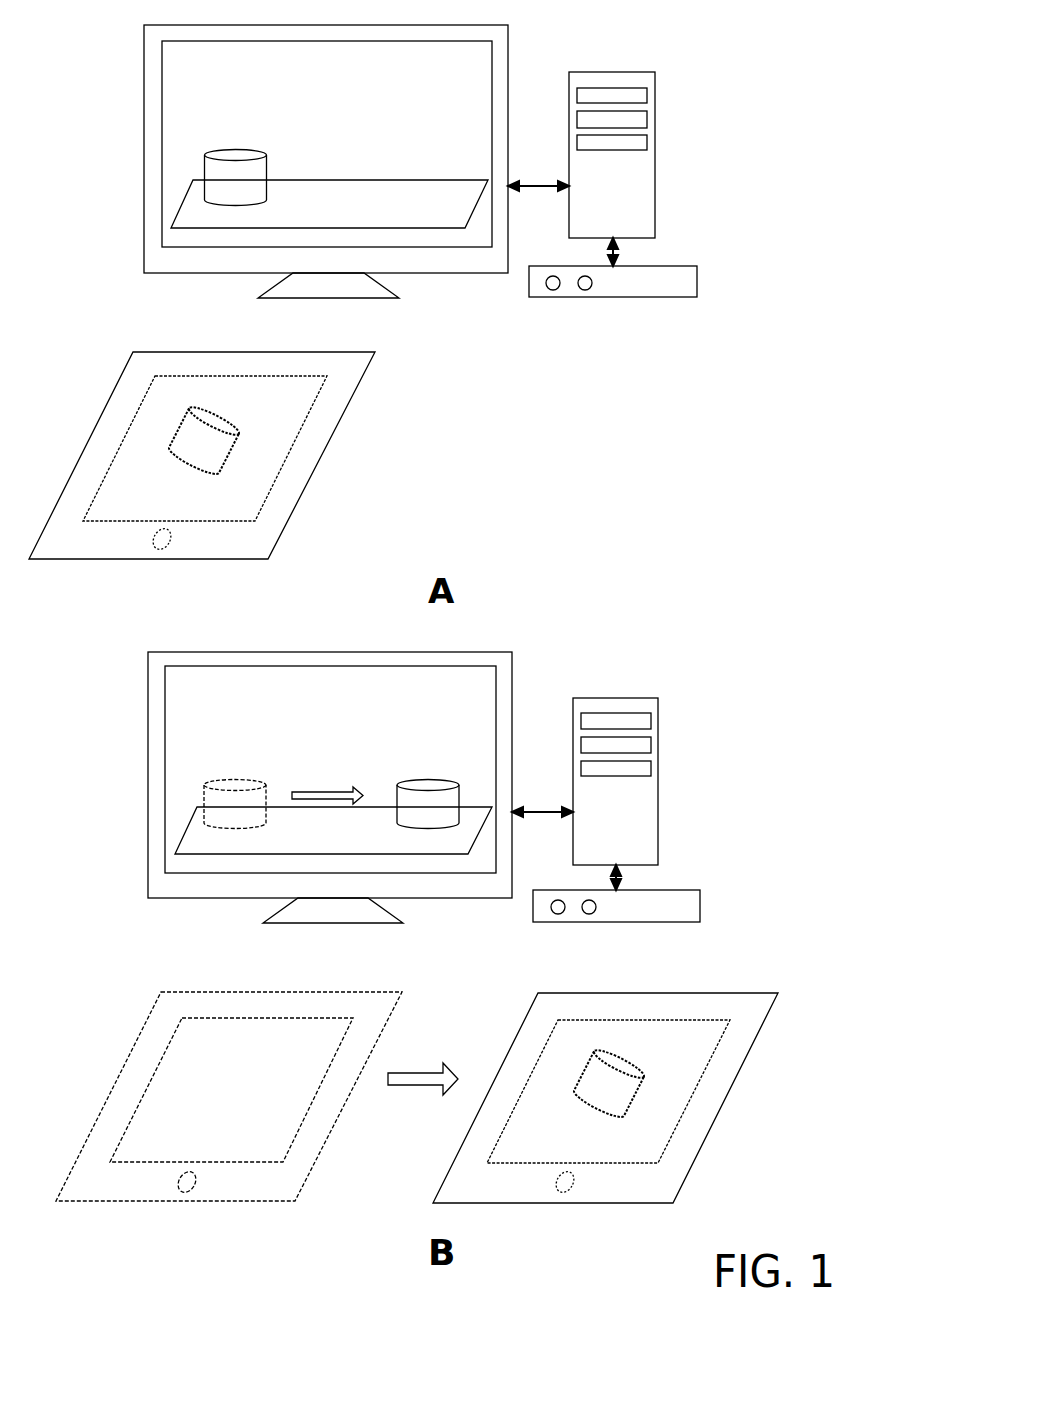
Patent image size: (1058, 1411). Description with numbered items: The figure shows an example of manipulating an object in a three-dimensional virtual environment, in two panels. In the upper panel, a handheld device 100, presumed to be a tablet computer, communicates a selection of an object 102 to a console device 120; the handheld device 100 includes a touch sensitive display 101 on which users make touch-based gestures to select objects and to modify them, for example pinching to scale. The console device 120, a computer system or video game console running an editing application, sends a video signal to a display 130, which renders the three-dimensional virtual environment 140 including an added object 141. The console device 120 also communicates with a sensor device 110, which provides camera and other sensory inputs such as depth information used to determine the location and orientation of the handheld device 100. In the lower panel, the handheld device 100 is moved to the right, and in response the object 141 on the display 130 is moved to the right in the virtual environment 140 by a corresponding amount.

The handheld device 100 is at (363, 353).
The touch sensitive display 101 is at (275, 450).
The object 102 is at (217, 412).
The sensor device 110 is at (665, 270).
The console device 120 is at (652, 108).
The display 130 is at (507, 36).
The 3D virtual environment 140 is at (488, 180).
The object 141 is at (240, 150).